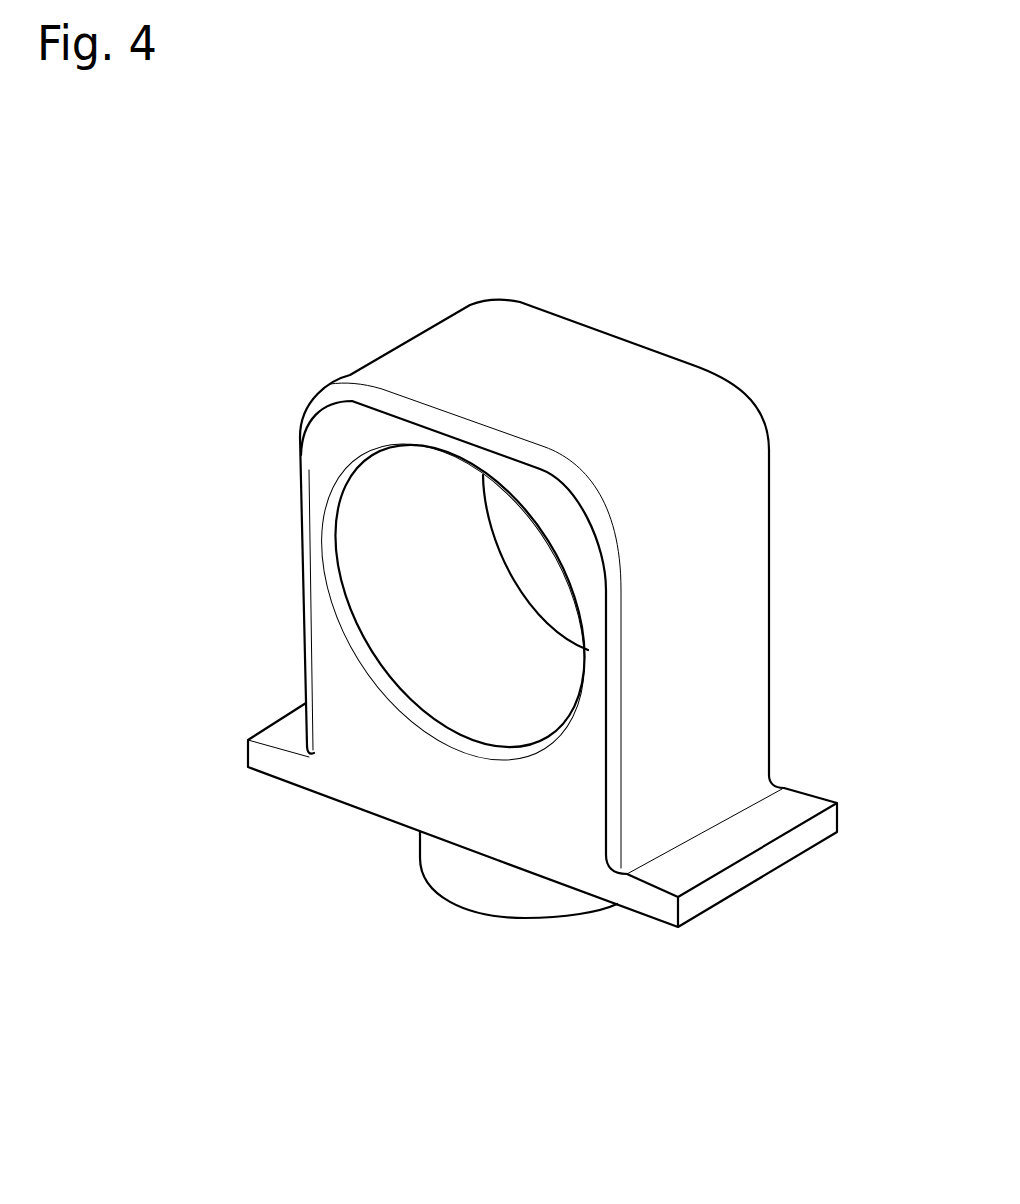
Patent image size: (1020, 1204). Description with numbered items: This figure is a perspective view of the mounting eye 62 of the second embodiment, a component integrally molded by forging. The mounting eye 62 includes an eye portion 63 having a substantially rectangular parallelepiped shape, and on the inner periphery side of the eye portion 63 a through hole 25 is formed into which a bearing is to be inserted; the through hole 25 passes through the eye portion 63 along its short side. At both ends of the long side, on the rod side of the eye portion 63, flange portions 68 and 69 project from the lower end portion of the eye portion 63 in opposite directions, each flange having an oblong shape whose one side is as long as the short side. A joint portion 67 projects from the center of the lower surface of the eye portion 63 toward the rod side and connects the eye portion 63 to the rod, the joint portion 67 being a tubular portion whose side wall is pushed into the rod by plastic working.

The mounting eye 62 is at (738, 283).
The eye portion 63 is at (758, 448).
The through hole 25 is at (425, 575).
The flange portion 68 is at (292, 733).
The flange portion 69 is at (788, 810).
The joint portion 67 is at (455, 903).